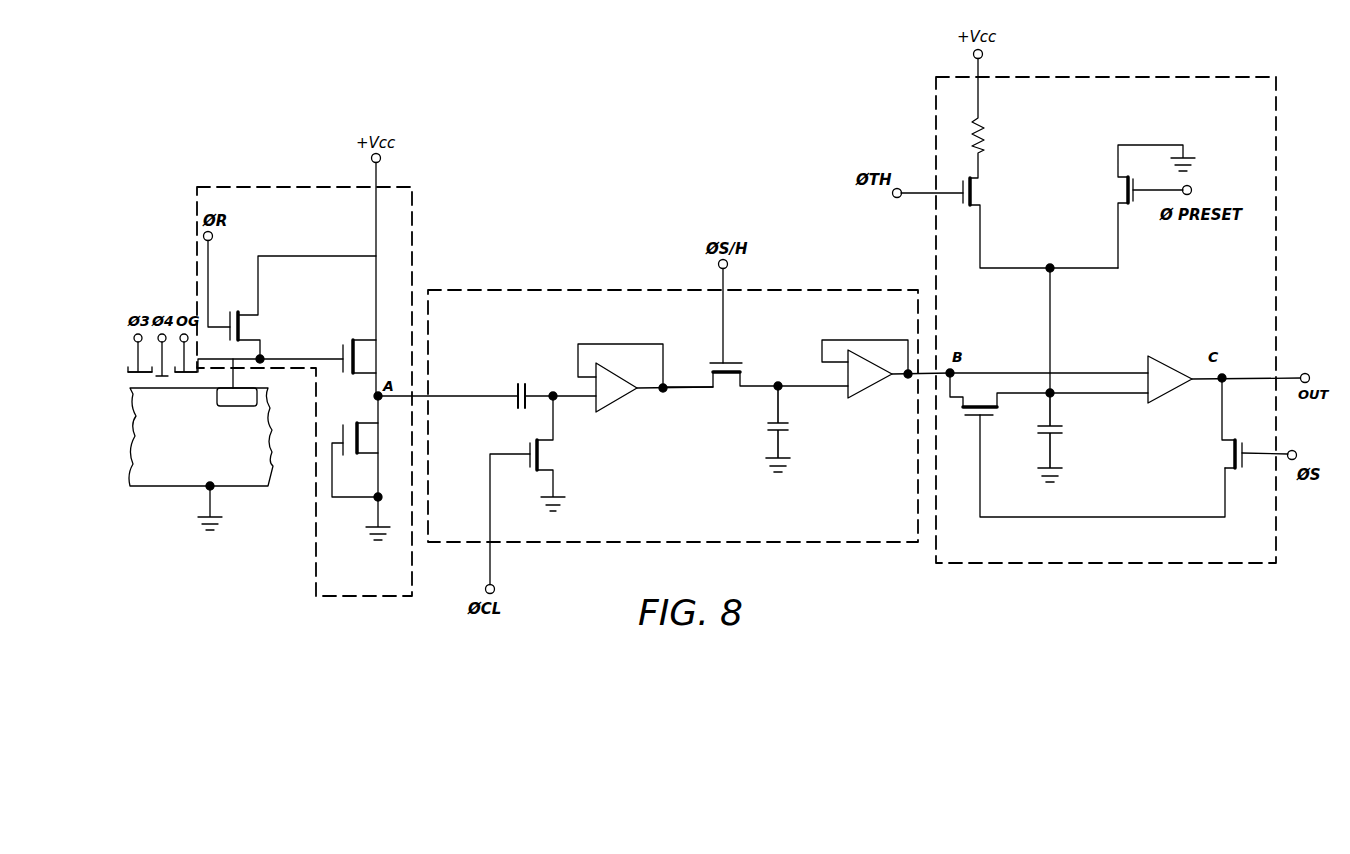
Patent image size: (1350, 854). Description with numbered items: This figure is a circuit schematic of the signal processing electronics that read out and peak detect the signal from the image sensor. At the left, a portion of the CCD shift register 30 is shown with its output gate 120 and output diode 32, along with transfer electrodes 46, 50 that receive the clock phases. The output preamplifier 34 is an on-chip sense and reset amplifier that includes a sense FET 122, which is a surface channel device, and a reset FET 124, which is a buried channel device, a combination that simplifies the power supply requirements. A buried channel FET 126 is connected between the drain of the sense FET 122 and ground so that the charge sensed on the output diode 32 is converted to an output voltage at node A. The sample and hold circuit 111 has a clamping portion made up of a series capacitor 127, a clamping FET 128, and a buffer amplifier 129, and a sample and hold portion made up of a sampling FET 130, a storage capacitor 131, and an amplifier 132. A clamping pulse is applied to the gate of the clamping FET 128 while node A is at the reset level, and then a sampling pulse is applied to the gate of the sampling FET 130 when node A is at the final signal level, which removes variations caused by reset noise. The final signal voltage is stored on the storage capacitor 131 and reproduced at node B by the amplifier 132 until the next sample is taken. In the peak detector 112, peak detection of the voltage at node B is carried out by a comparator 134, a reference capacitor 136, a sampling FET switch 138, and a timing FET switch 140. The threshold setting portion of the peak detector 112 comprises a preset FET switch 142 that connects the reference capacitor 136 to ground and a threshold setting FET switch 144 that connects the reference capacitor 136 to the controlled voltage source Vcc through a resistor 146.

The CCD shift register 30 is at (141, 461).
The output diode 32 is at (238, 406).
The output preamplifier 34 is at (302, 185).
The charge transfer electrode 46 is at (170, 380).
The charge transfer electrode 50 is at (142, 380).
The sample and hold circuit 111 is at (768, 290).
The peak detector 112 is at (1160, 77).
The output gate 120 is at (270, 365).
The sense FET 122 is at (348, 340).
The reset FET 124 is at (262, 321).
The buried channel FET 126 is at (362, 445).
The series capacitor 127 is at (524, 384).
The clamping FET 128 is at (556, 466).
The buffer amplifier 129 is at (630, 394).
The sampling FET 130 is at (728, 388).
The storage capacitor 131 is at (790, 429).
The amplifier 132 is at (878, 388).
The comparator 134 is at (1172, 392).
The reference capacitor 136 is at (1068, 434).
The sampling FET switch 138 is at (985, 402).
The timing FET switch 140 is at (1218, 456).
The preset FET switch 142 is at (1112, 187).
The threshold setting FET switch 144 is at (988, 203).
The resistor 146 is at (986, 141).